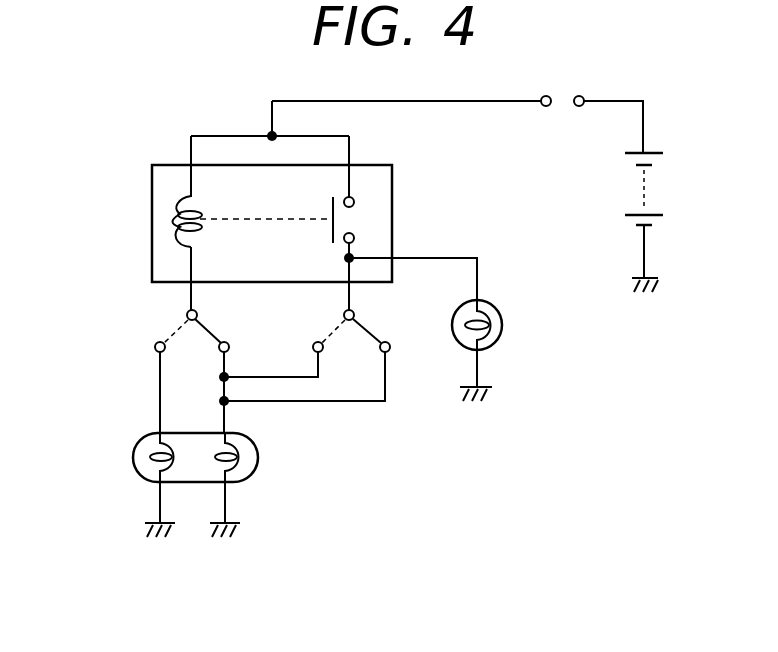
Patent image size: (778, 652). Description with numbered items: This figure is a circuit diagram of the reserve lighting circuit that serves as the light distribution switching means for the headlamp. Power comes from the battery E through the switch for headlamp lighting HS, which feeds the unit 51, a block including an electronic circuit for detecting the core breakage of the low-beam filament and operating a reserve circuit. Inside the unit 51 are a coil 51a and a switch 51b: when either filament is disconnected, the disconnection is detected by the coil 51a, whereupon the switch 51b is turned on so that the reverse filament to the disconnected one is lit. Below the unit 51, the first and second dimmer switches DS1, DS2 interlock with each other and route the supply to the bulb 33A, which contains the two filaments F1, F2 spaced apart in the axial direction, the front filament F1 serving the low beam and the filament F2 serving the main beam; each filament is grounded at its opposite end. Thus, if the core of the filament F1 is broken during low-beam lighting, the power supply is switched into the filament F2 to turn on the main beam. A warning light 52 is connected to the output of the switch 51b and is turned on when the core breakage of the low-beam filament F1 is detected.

The unit 51 is at (150, 178).
The coil 51a is at (170, 220).
The switch 51b is at (350, 217).
The warning light 52 is at (503, 318).
The bulb 33A is at (139, 480).
The filament F1 is at (133, 458).
The filament F2 is at (258, 458).
The first dimmer switch DS1 is at (174, 331).
The second dimmer switch DS2 is at (333, 331).
The switch for headlamp lighting HS is at (584, 82).
The battery E is at (648, 189).